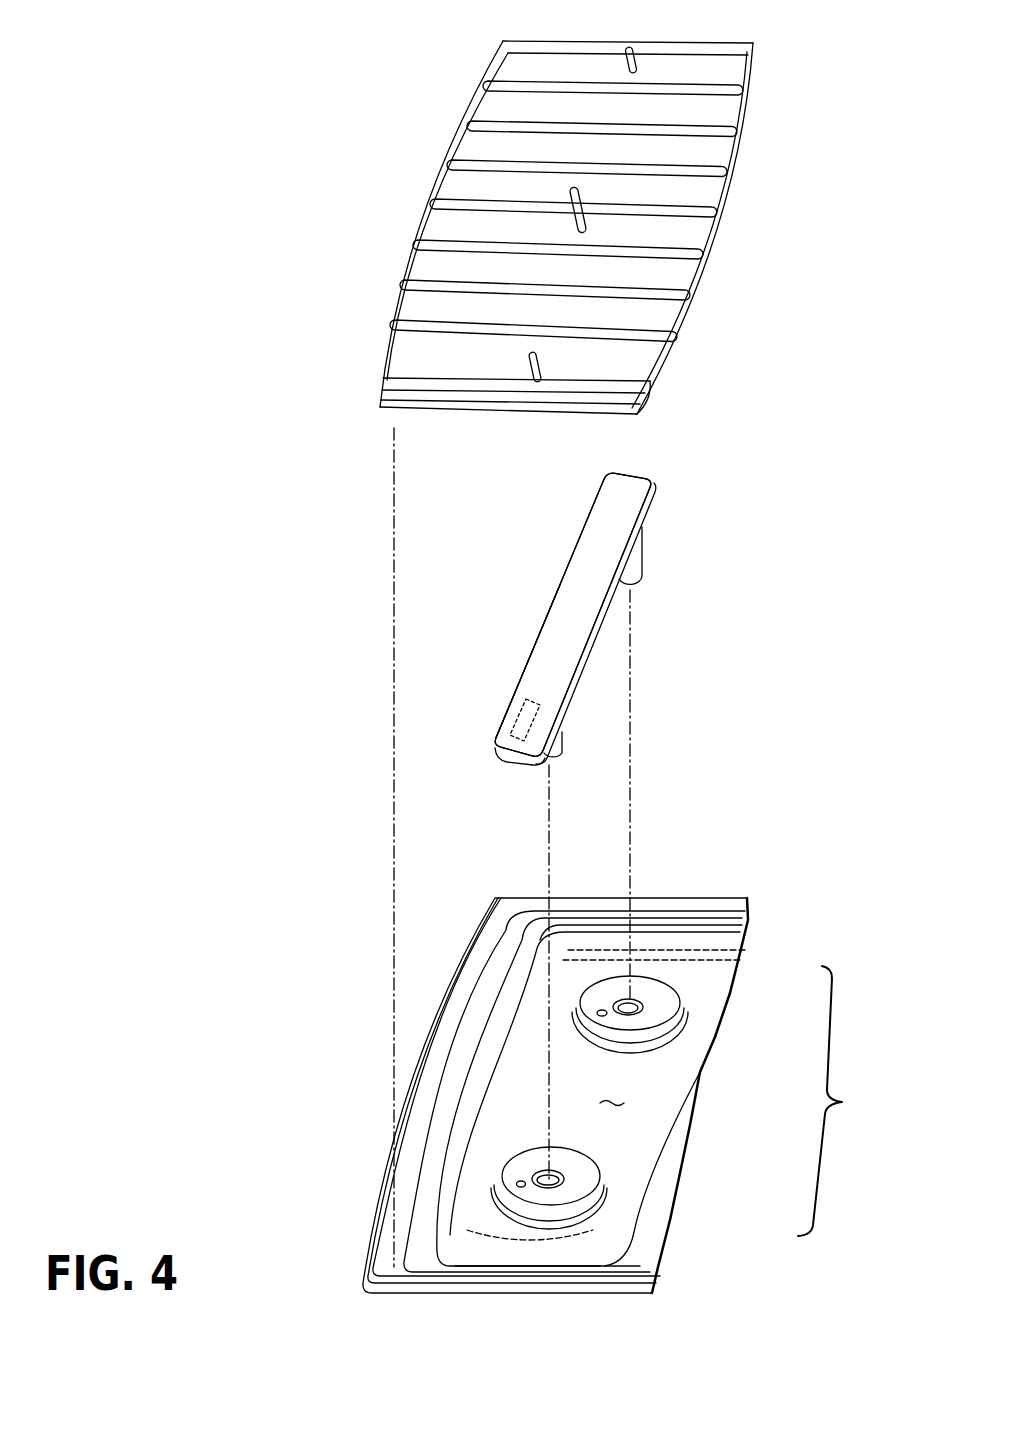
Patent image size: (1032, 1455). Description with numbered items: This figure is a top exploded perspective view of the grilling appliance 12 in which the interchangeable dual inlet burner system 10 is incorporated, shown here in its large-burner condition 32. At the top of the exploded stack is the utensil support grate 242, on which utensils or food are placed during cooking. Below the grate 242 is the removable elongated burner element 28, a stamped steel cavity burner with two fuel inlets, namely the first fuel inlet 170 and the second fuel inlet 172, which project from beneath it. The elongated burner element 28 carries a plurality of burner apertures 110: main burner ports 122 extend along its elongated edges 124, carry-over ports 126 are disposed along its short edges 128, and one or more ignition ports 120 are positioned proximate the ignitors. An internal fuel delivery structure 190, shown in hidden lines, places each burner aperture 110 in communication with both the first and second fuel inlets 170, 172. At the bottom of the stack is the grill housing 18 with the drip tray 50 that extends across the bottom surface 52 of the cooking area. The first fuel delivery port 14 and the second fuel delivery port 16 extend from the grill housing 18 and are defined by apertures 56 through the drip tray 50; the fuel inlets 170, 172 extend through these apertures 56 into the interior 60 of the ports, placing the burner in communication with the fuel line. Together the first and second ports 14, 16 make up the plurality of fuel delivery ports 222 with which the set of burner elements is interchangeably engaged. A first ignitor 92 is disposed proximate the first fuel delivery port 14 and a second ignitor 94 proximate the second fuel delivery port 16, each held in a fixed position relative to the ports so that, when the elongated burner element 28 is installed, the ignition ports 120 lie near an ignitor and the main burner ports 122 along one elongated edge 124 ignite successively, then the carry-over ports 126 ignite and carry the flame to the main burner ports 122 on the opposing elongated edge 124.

The interchangeable dual inlet burner system 10 is at (310, 866).
The grilling appliance 12 is at (270, 300).
The utensil support grate 242 is at (745, 107).
The elongated burner element 28 is at (586, 684).
The large-burner condition 32 is at (495, 596).
The burner apertures 110 is at (600, 620).
The ignition ports 120 is at (606, 485).
The main burner ports 122 is at (607, 598).
The elongated edges 124 is at (527, 659).
The carry-over ports 126 is at (513, 756).
The short edges 128 is at (632, 473).
The first fuel inlet 170 is at (640, 577).
The second fuel inlet 172 is at (555, 745).
The internal fuel delivery structure 190 is at (585, 564).
The grill housing 18 is at (385, 1160).
The drip tray 50 is at (510, 1090).
The bottom surface 52 is at (539, 1170).
The first fuel delivery port 14 is at (688, 982).
The second fuel delivery port 16 is at (607, 1222).
The interior 60 is at (632, 998).
The apertures 56 is at (566, 1175).
The first ignitor 92 is at (598, 1012).
The second ignitor 94 is at (520, 1186).
The plurality of fuel delivery ports 222 is at (839, 1101).